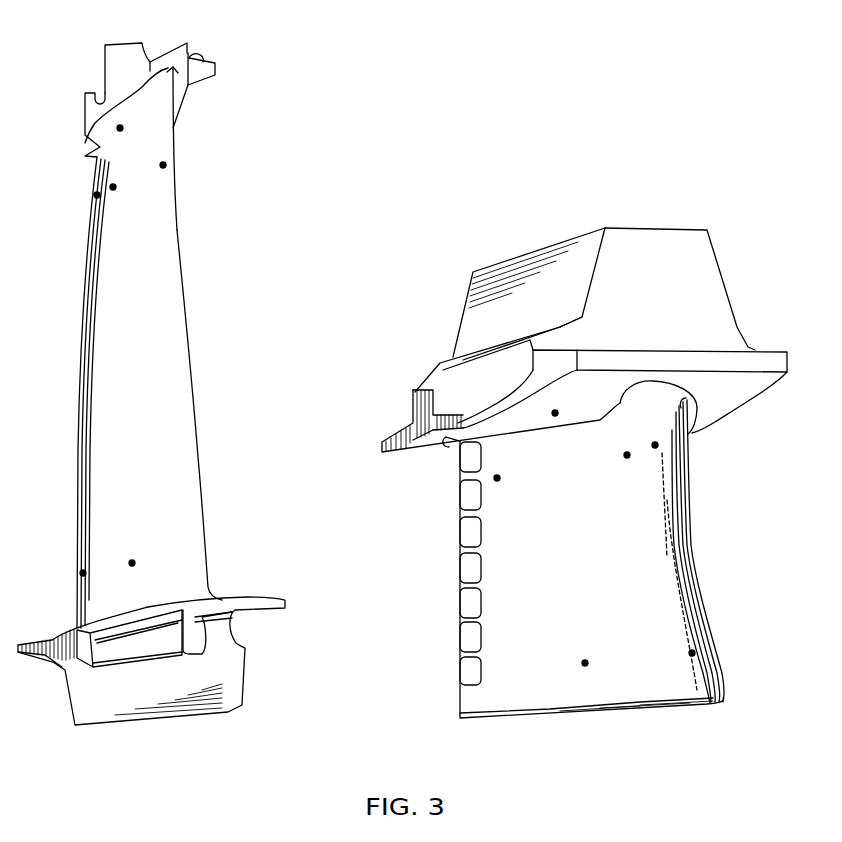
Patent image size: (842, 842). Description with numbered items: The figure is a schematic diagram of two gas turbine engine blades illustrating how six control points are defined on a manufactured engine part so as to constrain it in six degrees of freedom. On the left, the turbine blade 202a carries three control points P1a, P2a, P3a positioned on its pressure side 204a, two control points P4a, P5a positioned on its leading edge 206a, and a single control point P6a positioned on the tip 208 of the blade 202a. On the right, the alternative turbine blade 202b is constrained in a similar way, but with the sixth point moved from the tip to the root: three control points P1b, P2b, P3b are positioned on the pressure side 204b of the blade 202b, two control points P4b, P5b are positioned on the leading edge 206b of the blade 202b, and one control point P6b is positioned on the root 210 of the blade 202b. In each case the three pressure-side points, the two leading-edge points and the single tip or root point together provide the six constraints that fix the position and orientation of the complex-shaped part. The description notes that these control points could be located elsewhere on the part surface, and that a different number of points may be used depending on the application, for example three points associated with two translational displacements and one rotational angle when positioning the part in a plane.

The turbine blade 202a is at (255, 262).
The turbine blade 202b is at (553, 208).
The pressure side 204a is at (167, 457).
The pressure side 204b is at (533, 540).
The leading edge 206a is at (83, 323).
The leading edge 206b is at (673, 535).
The tip 208 is at (213, 73).
The root 210 is at (667, 262).
The control point P1a is at (129, 200).
The control point P2a is at (132, 553).
The control point P3a is at (183, 168).
The control point P4a is at (78, 195).
The control point P5a is at (64, 575).
The control point P6a is at (138, 130).
The control point P1b is at (627, 469).
The control point P2b is at (587, 653).
The control point P3b is at (507, 493).
The control point P4b is at (653, 433).
The control point P5b is at (674, 654).
The control point P6b is at (573, 404).